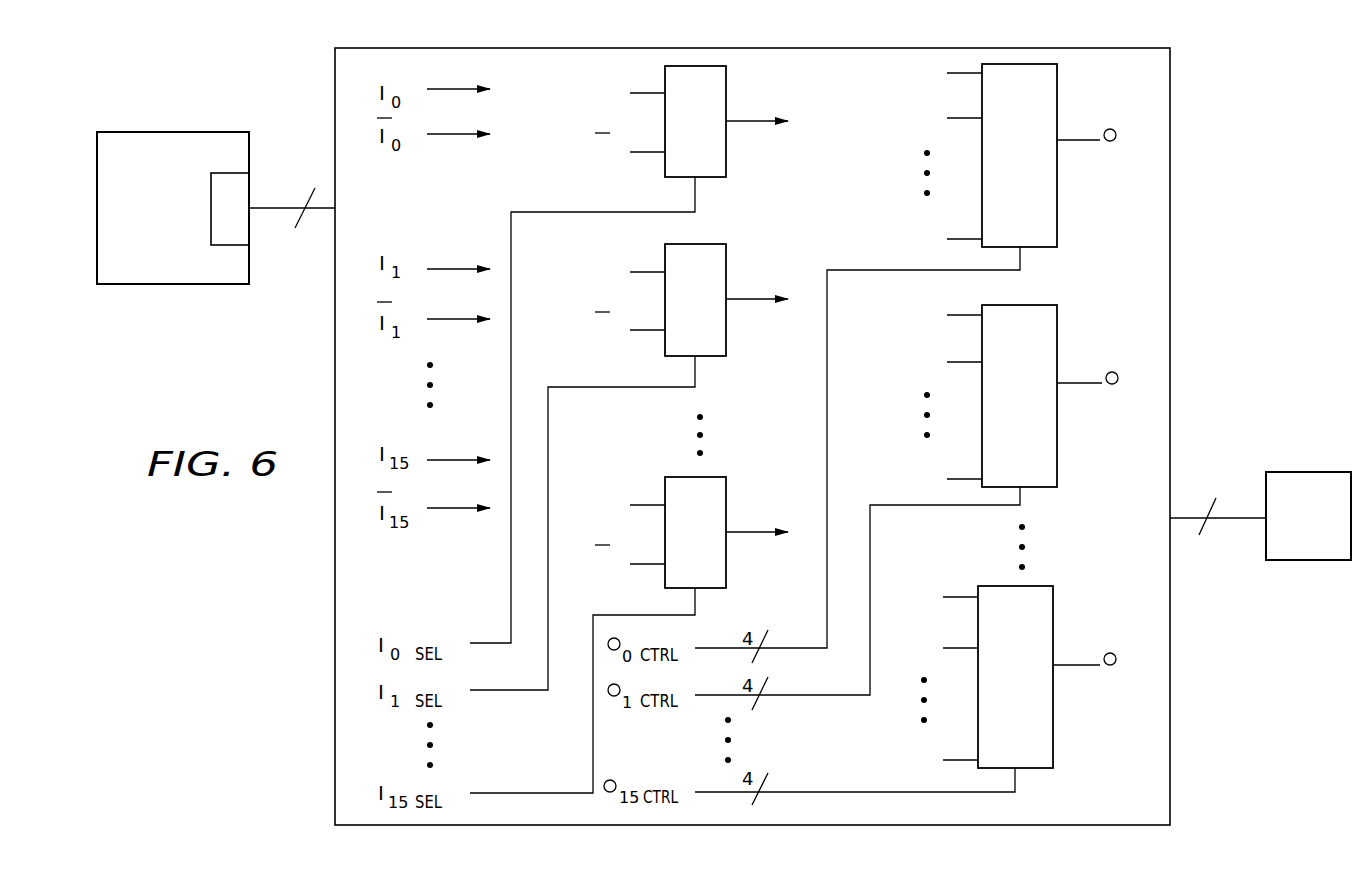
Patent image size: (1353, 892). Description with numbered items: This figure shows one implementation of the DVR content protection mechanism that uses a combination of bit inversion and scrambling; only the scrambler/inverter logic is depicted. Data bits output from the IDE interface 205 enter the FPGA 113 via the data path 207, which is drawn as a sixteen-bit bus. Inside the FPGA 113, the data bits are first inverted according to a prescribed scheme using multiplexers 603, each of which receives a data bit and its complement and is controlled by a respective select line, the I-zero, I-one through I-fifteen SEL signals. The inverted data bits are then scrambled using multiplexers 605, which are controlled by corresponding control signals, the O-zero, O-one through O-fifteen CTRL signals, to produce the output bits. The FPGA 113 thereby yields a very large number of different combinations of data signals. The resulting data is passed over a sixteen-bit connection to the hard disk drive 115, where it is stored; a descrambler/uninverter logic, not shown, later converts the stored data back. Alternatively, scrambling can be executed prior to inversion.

The FPGA 113 is at (1170, 85).
The IDE interface 205 is at (157, 284).
The data path 207 is at (270, 208).
The multiplexers 603 is at (726, 146).
The multiplexers 605 is at (1057, 192).
The hard disk drive 115 is at (1325, 560).